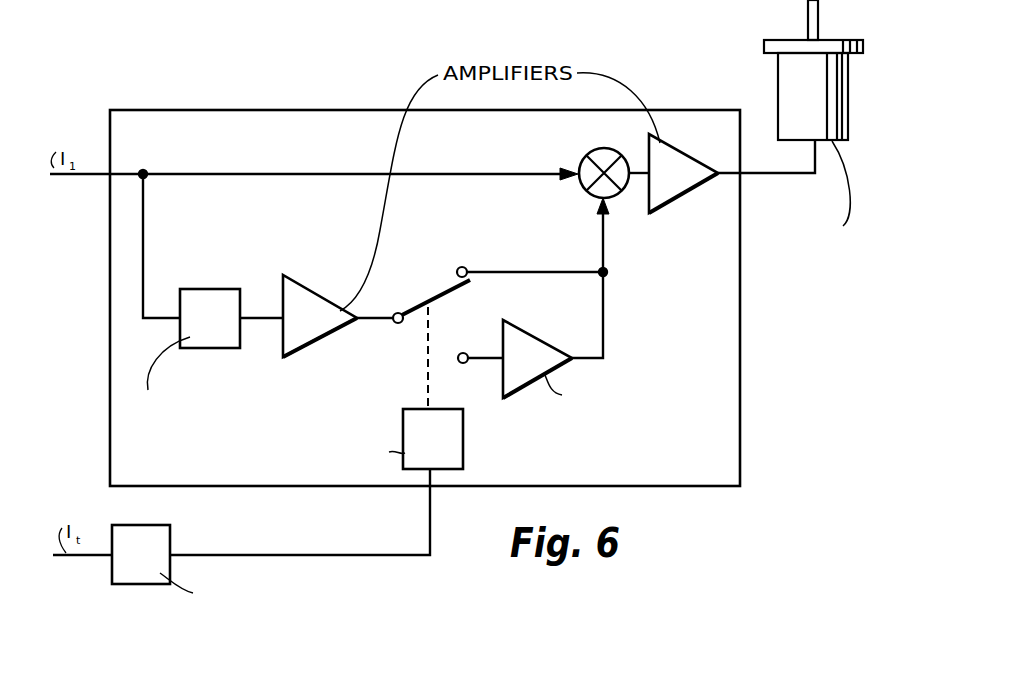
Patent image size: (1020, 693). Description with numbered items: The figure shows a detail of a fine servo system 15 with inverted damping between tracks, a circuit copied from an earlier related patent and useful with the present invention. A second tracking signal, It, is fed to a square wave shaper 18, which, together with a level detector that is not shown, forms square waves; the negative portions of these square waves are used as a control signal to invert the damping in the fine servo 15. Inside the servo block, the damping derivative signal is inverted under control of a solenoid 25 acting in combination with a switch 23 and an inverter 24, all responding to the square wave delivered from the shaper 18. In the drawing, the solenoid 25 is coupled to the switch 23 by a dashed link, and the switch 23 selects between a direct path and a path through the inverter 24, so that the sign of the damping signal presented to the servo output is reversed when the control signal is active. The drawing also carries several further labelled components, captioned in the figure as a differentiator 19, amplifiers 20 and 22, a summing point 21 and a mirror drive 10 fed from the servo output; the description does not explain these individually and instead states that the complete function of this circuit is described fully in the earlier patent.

The mirror drive 10 is at (784, 80).
The fine servo 15 is at (257, 110).
The square wave shaper 18 is at (143, 582).
The differentiator 19 is at (222, 291).
The amplifier 20 is at (298, 296).
The summing junction 21 is at (591, 166).
The amplifier 22 is at (670, 154).
The switch 23 is at (418, 306).
The inverter 24 is at (541, 351).
The solenoid 25 is at (462, 436).